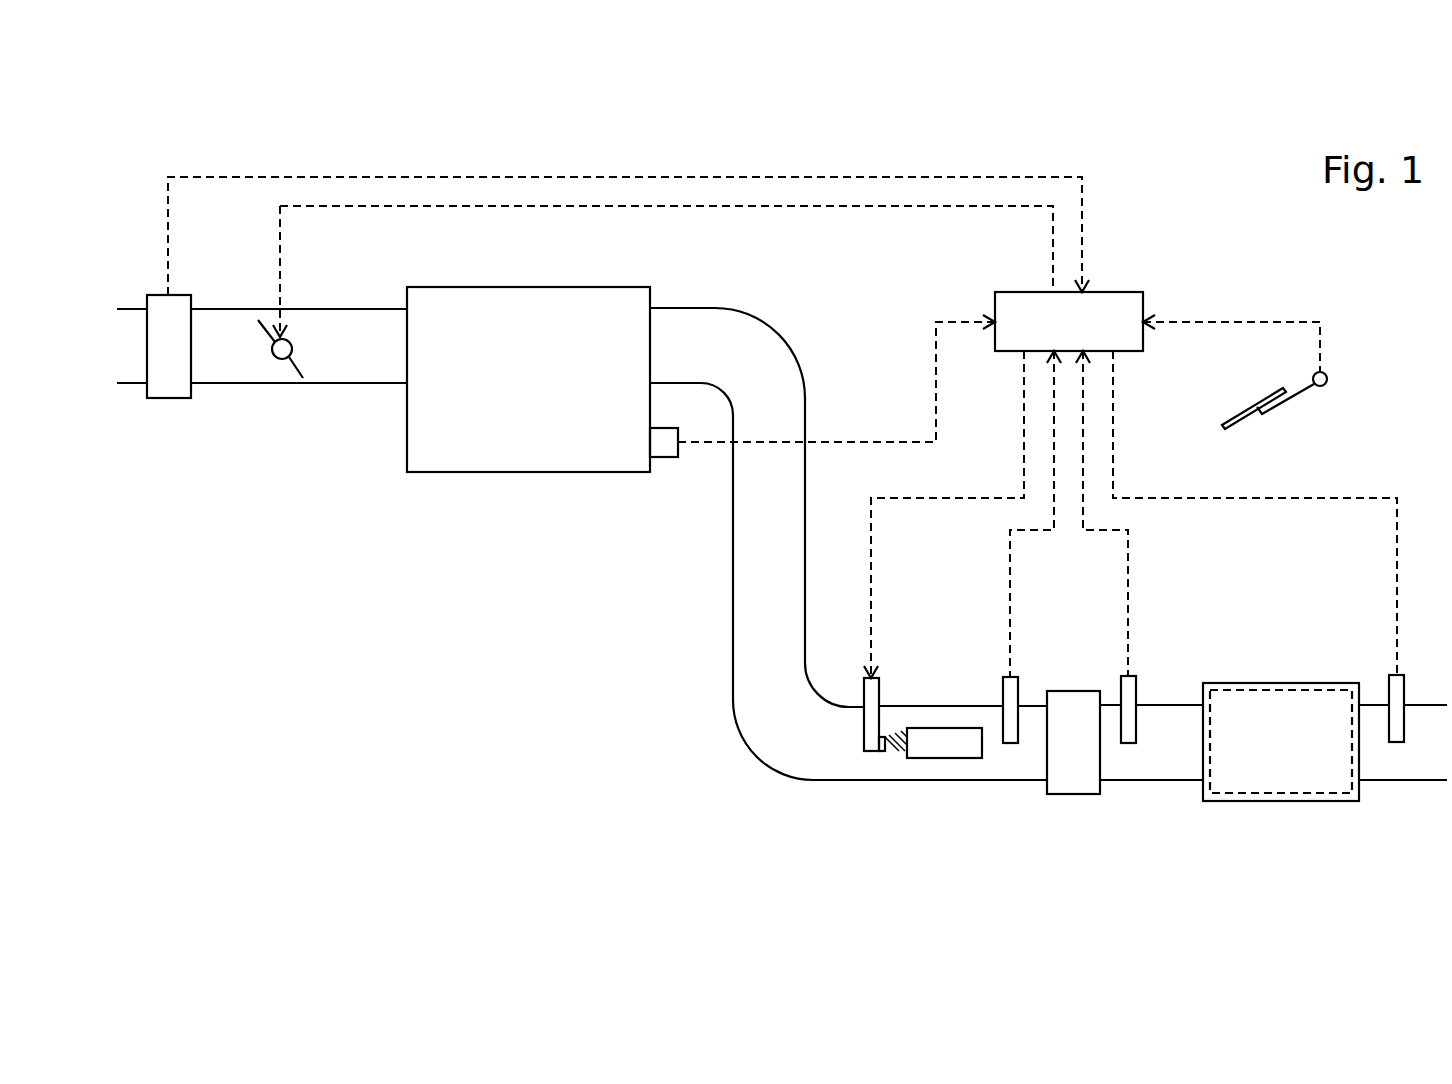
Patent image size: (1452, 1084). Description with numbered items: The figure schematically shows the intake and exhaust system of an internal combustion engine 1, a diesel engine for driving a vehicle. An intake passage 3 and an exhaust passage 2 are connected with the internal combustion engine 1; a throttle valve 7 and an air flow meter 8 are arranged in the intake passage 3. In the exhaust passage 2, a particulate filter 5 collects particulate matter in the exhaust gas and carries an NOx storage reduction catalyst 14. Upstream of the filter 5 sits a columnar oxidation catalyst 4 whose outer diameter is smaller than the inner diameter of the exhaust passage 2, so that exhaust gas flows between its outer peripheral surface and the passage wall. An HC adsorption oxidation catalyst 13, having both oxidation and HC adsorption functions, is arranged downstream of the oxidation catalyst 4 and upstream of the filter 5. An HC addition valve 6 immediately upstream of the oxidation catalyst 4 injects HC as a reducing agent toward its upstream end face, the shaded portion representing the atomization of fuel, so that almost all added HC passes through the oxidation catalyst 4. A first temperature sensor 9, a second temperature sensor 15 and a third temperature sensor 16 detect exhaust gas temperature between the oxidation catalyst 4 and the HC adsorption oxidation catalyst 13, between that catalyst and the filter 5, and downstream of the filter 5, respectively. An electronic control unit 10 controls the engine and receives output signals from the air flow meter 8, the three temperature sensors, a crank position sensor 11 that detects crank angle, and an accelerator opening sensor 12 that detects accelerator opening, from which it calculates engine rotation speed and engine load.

The internal combustion engine 1 is at (537, 472).
The exhaust passage 2 is at (731, 648).
The intake passage 3 is at (347, 383).
The oxidation catalyst 4 is at (943, 758).
The particulate filter 5 is at (1270, 801).
The HC addition valve 6 is at (882, 690).
The throttle valve 7 is at (272, 357).
The air flow meter 8 is at (170, 398).
The first temperature sensor 9 is at (1020, 690).
The electronic control unit 10 is at (1113, 292).
The crank position sensor 11 is at (663, 457).
The accelerator opening sensor 12 is at (1327, 381).
The HC adsorption oxidation catalyst 13 is at (1068, 794).
The NOx storage reduction catalyst 14 is at (1275, 690).
The second temperature sensor 15 is at (1136, 690).
The third temperature sensor 16 is at (1404, 690).